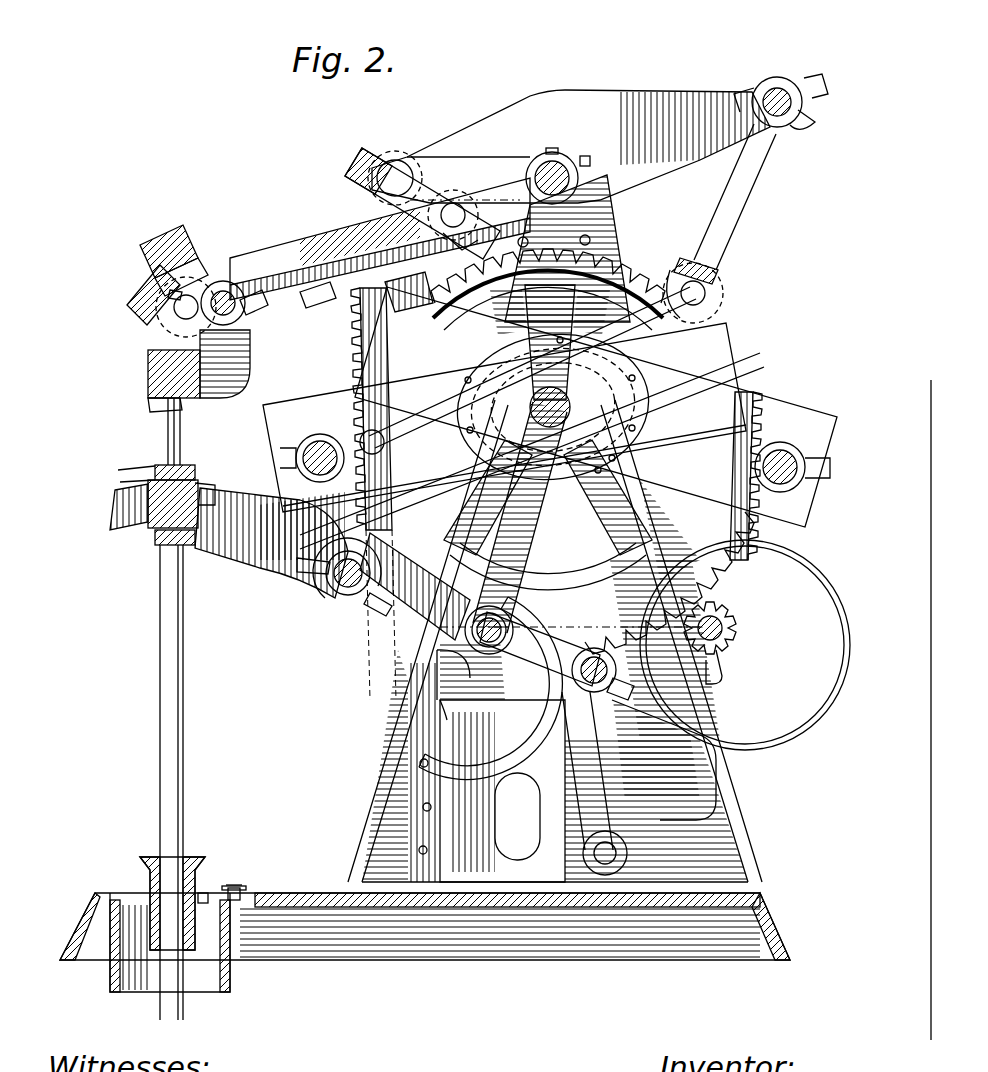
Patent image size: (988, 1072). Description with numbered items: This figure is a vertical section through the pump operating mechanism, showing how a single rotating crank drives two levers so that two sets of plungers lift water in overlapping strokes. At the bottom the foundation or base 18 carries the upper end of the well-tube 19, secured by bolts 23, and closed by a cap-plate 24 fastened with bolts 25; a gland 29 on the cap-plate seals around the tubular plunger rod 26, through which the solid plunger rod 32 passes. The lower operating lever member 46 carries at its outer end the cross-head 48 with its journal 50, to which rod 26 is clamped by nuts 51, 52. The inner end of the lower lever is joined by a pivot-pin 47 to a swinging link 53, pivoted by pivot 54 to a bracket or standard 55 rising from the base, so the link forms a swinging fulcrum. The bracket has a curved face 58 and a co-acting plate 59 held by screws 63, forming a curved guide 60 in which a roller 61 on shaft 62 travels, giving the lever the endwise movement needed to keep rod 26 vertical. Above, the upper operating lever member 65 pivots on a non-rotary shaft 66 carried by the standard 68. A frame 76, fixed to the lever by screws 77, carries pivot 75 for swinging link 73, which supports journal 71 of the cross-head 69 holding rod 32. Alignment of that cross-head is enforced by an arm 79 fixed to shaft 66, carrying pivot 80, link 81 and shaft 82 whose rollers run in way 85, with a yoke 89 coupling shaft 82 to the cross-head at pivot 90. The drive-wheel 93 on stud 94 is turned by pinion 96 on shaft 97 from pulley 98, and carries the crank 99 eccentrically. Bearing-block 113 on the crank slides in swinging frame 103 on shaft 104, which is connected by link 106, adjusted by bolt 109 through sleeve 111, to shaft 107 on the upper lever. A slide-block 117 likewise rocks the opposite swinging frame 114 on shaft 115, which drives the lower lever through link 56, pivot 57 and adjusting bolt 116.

The foundation or base 18 is at (436, 940).
The well-tube 19 is at (232, 976).
The bolts 23 is at (238, 888).
The cap-plate 24 is at (206, 893).
The bolts 25 is at (234, 886).
The tubular plunger rod 26 is at (166, 631).
The gland 29 is at (150, 876).
The solid plunger rod 32 is at (182, 446).
The lower operating lever member 46 is at (224, 562).
The pivot-pin or shaft 47 is at (612, 690).
The cross-head 48 is at (148, 526).
The journal 50 is at (154, 470).
The nut 51 is at (206, 497).
The nut 52 is at (163, 537).
The swinging link 53 is at (613, 807).
The pivot 54 is at (609, 851).
The bracket or standard 55 is at (567, 803).
The link 56 is at (324, 582).
The pivot 57 is at (346, 600).
The curved face 58 is at (470, 707).
The co-acting plate 59 is at (447, 720).
The curved guide 60 is at (460, 747).
The roller 61 is at (558, 618).
The shaft 62 is at (503, 610).
The screws 63 is at (420, 848).
The upper operating lever member 65 is at (325, 236).
The non-rotary fulcrum or shaft 66 is at (557, 163).
The standard 68 is at (745, 846).
The cross-head 69 is at (148, 372).
The journal 71 is at (150, 402).
The swinging link 73 is at (196, 345).
The pivot 75 is at (178, 298).
The frame 76 is at (172, 242).
The screws 77 is at (228, 280).
The arm 79 is at (486, 176).
The pivot 80 is at (392, 160).
The link 81 is at (434, 165).
The shaft 82 is at (454, 230).
The way 85 is at (528, 200).
The yoke 89 is at (346, 272).
The pivot 90 is at (246, 314).
The drive-wheel 93 is at (665, 278).
The stud 94 is at (554, 512).
The pinion 96 is at (735, 622).
The shaft 97 is at (724, 630).
The pulley 98 is at (817, 557).
The crank or crank-shaft 99 is at (566, 408).
The swinging frame 103 is at (424, 388).
The shaft 104 is at (308, 442).
The link 106 is at (730, 196).
The shaft 107 is at (771, 78).
The bolt 109 is at (730, 352).
The sleeve 111 is at (738, 372).
The bearing-block 113 is at (522, 382).
The swinging frame 114 is at (666, 386).
The shaft 115 is at (780, 442).
The bolt 116 is at (408, 288).
The slide-block 117 is at (514, 380).